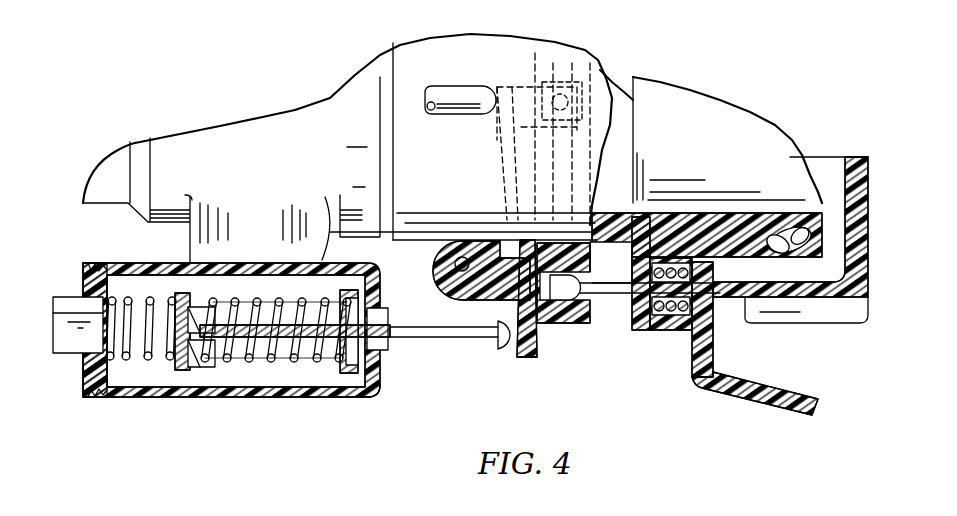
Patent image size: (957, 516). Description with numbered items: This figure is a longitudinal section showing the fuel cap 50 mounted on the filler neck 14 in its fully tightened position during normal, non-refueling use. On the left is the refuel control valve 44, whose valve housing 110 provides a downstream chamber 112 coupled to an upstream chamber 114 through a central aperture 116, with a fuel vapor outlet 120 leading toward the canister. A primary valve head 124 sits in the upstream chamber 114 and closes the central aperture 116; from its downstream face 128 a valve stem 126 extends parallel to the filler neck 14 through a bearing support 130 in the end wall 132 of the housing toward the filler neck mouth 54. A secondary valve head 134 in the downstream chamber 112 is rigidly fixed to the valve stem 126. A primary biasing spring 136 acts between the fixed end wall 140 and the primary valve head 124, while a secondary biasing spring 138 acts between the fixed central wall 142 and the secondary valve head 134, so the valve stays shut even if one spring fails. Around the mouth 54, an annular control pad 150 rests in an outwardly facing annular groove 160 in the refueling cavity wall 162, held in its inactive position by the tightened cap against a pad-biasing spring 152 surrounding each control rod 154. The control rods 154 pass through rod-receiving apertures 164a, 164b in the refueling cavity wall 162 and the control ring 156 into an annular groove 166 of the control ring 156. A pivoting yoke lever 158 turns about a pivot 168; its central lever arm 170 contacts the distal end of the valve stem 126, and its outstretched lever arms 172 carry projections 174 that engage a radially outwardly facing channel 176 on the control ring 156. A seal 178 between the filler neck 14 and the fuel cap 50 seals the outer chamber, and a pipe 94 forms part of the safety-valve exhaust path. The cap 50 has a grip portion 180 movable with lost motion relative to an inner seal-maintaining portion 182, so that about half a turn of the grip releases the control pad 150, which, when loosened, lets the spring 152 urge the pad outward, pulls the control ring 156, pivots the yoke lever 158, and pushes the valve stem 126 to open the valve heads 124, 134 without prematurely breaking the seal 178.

The filler neck 14 is at (268, 118).
The refuel control valve 44 is at (180, 403).
The fuel cap 50 is at (825, 302).
The filler neck mouth 54 is at (770, 262).
The pipe 94 is at (450, 95).
The valve housing 110 is at (307, 393).
The downstream chamber 112 is at (318, 258).
The upstream chamber 114 is at (147, 288).
The central aperture 116 is at (240, 360).
The fuel vapor outlet 120 is at (63, 297).
The primary valve head 124 is at (166, 373).
The valve stem 126 is at (457, 338).
The downstream face 128 is at (198, 295).
The bearing support 130 is at (380, 318).
The end wall 132 is at (375, 385).
The secondary valve head 134 is at (337, 362).
The primary biasing spring 136 is at (133, 367).
The secondary biasing spring 138 is at (273, 360).
The fixed end wall 140 is at (90, 367).
The fixed central wall 142 is at (215, 285).
The annular control pad 150 is at (715, 300).
The pad-biasing spring 152 is at (735, 315).
The control rod 154 is at (612, 287).
The control ring 156 is at (605, 58).
The pivoting yoke lever 158 is at (500, 155).
The annular groove 160 is at (662, 315).
The refueling cavity wall 162 is at (802, 395).
The rod-receiving aperture 164a is at (587, 295).
The rod-receiving aperture 164b is at (565, 300).
The annular groove 166 is at (558, 302).
The pivot 168 is at (463, 255).
The central lever arm 170 is at (524, 358).
The outstretched lever arms 172 is at (500, 140).
The projections 174 is at (522, 85).
The radially outwardly facing channel 176 is at (525, 340).
The seal 178 is at (822, 210).
The grip portion 180 is at (856, 308).
The seal-maintaining portion 182 is at (735, 200).